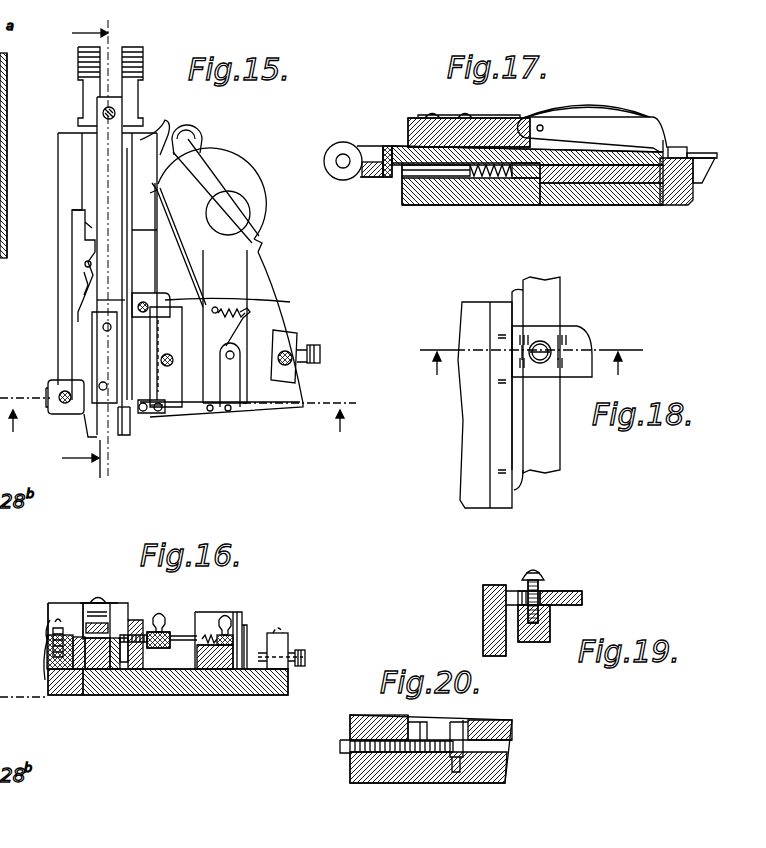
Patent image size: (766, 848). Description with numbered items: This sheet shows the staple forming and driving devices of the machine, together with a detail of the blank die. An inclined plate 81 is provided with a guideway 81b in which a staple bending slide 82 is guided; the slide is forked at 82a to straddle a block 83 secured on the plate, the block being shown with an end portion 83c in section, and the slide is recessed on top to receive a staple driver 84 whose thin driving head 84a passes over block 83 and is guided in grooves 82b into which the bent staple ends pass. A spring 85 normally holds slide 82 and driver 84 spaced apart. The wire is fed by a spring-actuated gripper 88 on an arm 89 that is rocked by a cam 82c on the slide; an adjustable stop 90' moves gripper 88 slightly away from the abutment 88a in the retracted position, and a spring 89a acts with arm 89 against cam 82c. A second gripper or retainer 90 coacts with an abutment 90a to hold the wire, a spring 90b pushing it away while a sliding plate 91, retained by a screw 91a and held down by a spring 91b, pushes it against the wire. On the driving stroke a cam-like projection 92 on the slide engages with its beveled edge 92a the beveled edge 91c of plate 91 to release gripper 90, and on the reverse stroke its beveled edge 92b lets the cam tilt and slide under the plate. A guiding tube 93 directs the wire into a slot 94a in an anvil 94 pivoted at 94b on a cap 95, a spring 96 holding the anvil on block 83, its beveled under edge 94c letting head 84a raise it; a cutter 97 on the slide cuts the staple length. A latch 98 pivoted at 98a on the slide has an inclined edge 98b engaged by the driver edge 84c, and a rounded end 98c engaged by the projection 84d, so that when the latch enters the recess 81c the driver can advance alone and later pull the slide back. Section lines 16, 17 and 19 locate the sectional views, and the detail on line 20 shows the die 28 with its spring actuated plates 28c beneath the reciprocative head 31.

In FIG. 15, the reciprocative head or block 31 is at (5, 183).
In FIG. 15, the section line 17 17 is at (100, 251).
In FIG. 15, the section line 16 16 is at (179, 404).
In FIG. 18, the section line 19 19 is at (531, 350).
In FIG. 16, the section line 20 20 is at (22, 687).
In FIG. 15, the plate 81 is at (270, 285).
In FIG. 17, the plate 81 is at (613, 192).
In FIG. 16, the plate 81 is at (175, 690).
In FIG. 15, the guideway 81b is at (78, 347).
In FIG. 19, the guideway 81b is at (509, 637).
In FIG. 16, the guideway 81b is at (70, 688).
In FIG. 15, the recess 81c is at (75, 240).
In FIG. 15, the staple bending slide 82 is at (62, 392).
In FIG. 17, the staple bending slide 82 is at (557, 190).
In FIG. 18, the staple bending slide 82 is at (485, 405).
In FIG. 19, the staple bending slide 82 is at (483, 613).
In FIG. 16, the staple bending slide 82 is at (82, 690).
In FIG. 15, the forked end 82a is at (100, 428).
In FIG. 17, the grooves 82b is at (711, 182).
In FIG. 16, the grooves 82b is at (140, 633).
In FIG. 15, the cam 82c is at (175, 132).
In FIG. 16, the block 83 is at (103, 690).
In FIG. 17, the rod end block 83c is at (680, 192).
In FIG. 15, the staple driver 84 is at (172, 172).
In FIG. 17, the staple driver 84 is at (406, 149).
In FIG. 15, the driving head 84a is at (108, 357).
In FIG. 17, the driving head 84a is at (700, 153).
In FIG. 16, the driving head 84a is at (78, 630).
In FIG. 15, the inclined edge 84c is at (93, 300).
In FIG. 15, the projection 84d is at (178, 245).
In FIG. 17, the spring 85 is at (475, 180).
In FIG. 15, the wire gripper 88 is at (233, 387).
In FIG. 16, the wire gripper 88 is at (245, 640).
In FIG. 15, the abutment 88a is at (218, 410).
In FIG. 15, the arm 89 is at (240, 272).
In FIG. 16, the arm 89 is at (240, 630).
In FIG. 15, the spring 89a is at (237, 232).
In FIG. 15, the wire gripper or retainer 90 is at (178, 357).
In FIG. 16, the wire gripper or retainer 90 is at (194, 688).
In FIG. 15, the abutment 90a is at (165, 410).
In FIG. 15, the spring 90b is at (188, 356).
In FIG. 15, the adjustable stop 90' is at (307, 347).
In FIG. 16, the adjustable stop 90' is at (300, 647).
In FIG. 15, the sliding plate 91 is at (252, 305).
In FIG. 18, the sliding plate 91 is at (571, 372).
In FIG. 19, the sliding plate 91 is at (555, 594).
In FIG. 15, the screw 91a is at (145, 300).
In FIG. 18, the screw 91a is at (548, 342).
In FIG. 19, the screw 91a is at (541, 570).
In FIG. 19, the spring 91b is at (522, 588).
In FIG. 18, the beveled edge 91c is at (512, 293).
In FIG. 15, the cam-like projection 92 is at (111, 303).
In FIG. 18, the cam-like projection 92 is at (520, 430).
In FIG. 18, the beveled edge 92a is at (524, 490).
In FIG. 18, the beveled edge 92b is at (502, 383).
In FIG. 15, the wire guiding tube 93 is at (152, 415).
In FIG. 16, the wire guiding tube 93 is at (167, 633).
In FIG. 17, the anvil 94 is at (650, 137).
In FIG. 16, the anvil 94 is at (110, 620).
In FIG. 17, the slot 94a is at (688, 146).
In FIG. 17, the pivot 94b is at (540, 123).
In FIG. 17, the beveled under edge 94c is at (668, 146).
In FIG. 17, the cap or plate 95 is at (470, 134).
In FIG. 16, the cap or plate 95 is at (53, 621).
In FIG. 17, the spring 96 is at (590, 115).
In FIG. 16, the spring 96 is at (88, 605).
In FIG. 15, the knife or cutter 97 is at (128, 425).
In FIG. 15, the latch 98 is at (88, 224).
In FIG. 15, the pivot 98a is at (92, 258).
In FIG. 15, the inclined edge 98b is at (195, 178).
In FIG. 15, the rounded end portion 98c is at (90, 280).
In FIG. 20, the die 28 is at (498, 768).
In FIG. 20, the spring actuated plates 28c is at (455, 716).